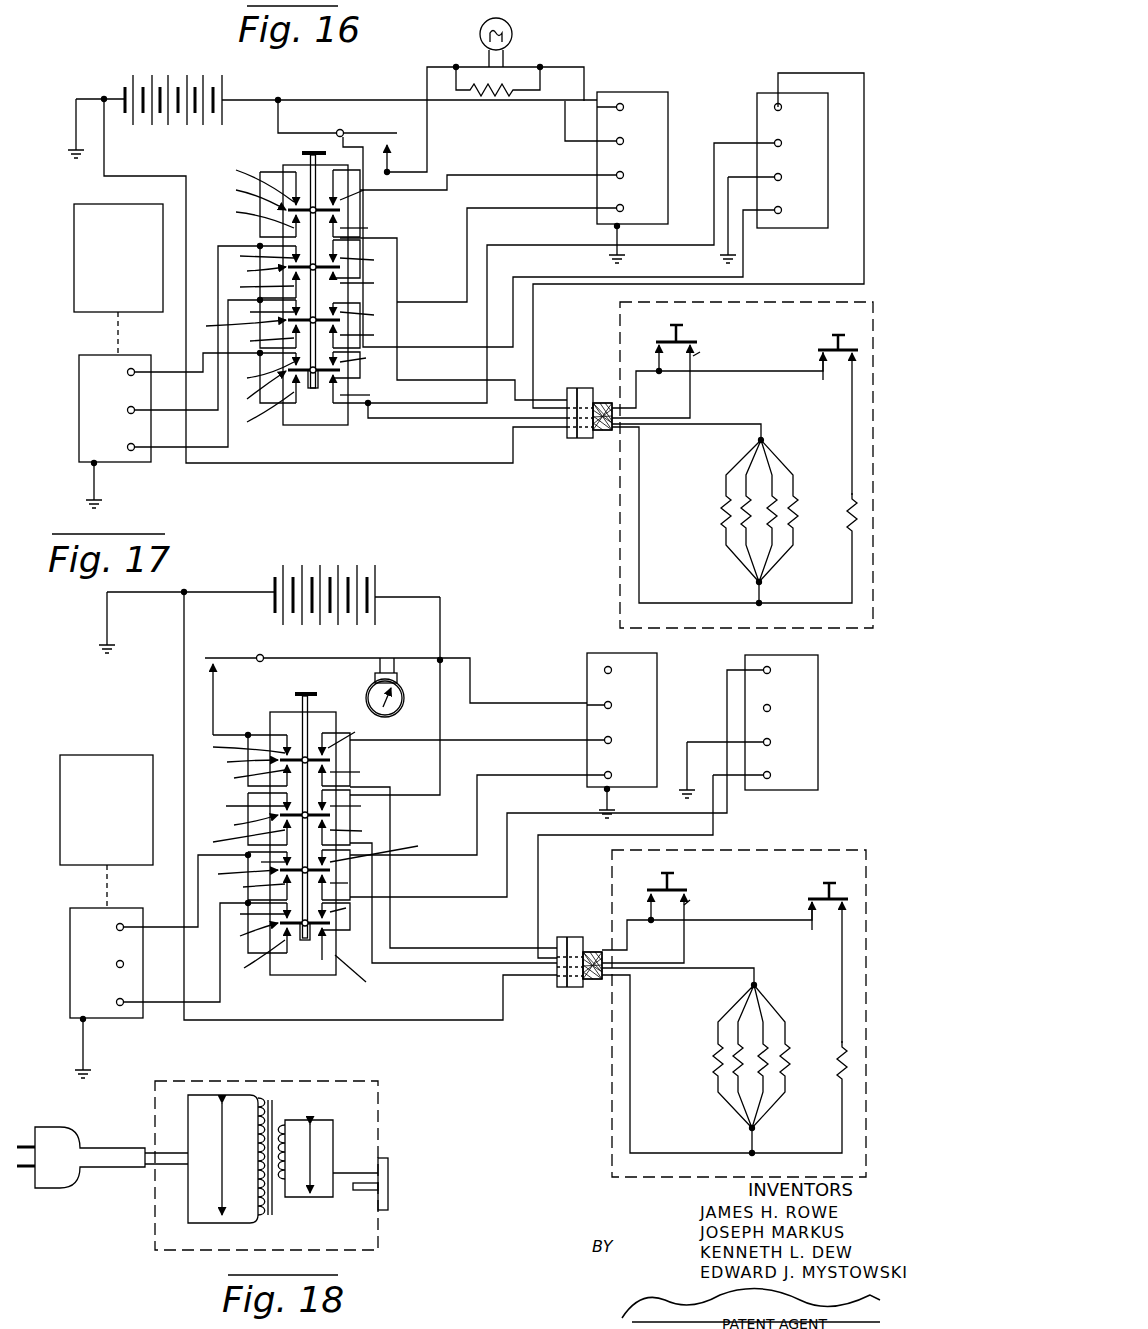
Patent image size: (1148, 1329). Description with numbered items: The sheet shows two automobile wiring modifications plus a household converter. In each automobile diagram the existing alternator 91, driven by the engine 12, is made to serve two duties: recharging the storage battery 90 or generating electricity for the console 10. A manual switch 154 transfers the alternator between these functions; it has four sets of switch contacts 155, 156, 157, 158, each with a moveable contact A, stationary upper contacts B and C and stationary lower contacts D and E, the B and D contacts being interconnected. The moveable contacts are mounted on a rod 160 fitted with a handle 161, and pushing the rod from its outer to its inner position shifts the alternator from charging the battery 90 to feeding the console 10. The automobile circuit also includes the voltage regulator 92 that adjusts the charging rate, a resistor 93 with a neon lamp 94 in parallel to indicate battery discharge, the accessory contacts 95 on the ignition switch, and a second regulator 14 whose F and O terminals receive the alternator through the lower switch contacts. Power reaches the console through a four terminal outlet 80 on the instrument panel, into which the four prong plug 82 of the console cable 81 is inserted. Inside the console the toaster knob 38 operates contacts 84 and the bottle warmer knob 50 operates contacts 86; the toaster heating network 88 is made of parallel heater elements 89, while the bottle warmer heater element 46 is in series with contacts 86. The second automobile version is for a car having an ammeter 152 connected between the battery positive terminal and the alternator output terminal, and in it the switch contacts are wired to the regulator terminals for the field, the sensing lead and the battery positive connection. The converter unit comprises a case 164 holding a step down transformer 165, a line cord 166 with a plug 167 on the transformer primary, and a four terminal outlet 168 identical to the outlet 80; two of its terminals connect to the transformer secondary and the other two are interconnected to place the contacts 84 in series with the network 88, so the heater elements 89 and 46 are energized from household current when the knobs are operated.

In FIG. 16, the console 10 is at (618, 535).
In FIG. 17, the console 10 is at (610, 1070).
In FIG. 16, the engine 12 is at (74, 241).
In FIG. 17, the engine 12 is at (60, 850).
In FIG. 16, the regulator 14 is at (825, 148).
In FIG. 17, the regulator 14 is at (810, 692).
In FIG. 16, the knob 38 is at (678, 333).
In FIG. 17, the knob 38 is at (668, 880).
In FIG. 16, the heater element 46 is at (845, 530).
In FIG. 17, the heater element 46 is at (836, 1075).
In FIG. 16, the knob 50 is at (836, 342).
In FIG. 17, the knob 50 is at (829, 885).
In FIG. 16, the four terminal outlet 80 is at (572, 388).
In FIG. 17, the four terminal outlet 80 is at (562, 937).
In FIG. 16, the cable 81 is at (600, 432).
In FIG. 17, the cable 81 is at (592, 982).
In FIG. 16, the four prong plug 82 is at (585, 388).
In FIG. 17, the four prong plug 82 is at (577, 937).
In FIG. 16, the contacts 84 is at (700, 352).
In FIG. 17, the contacts 84 is at (695, 898).
In FIG. 16, the contacts 86 is at (833, 370).
In FIG. 17, the contacts 86 is at (822, 918).
In FIG. 16, the heating network 88 is at (733, 521).
In FIG. 17, the heating network 88 is at (712, 1025).
In FIG. 16, the heater elements 89 is at (795, 520).
In FIG. 17, the heater elements 89 is at (787, 1068).
In FIG. 16, the storage battery 90 is at (170, 82).
In FIG. 17, the storage battery 90 is at (322, 578).
In FIG. 16, the alternator 91 is at (79, 418).
In FIG. 17, the alternator 91 is at (80, 990).
In FIG. 16, the voltage regulator 92 is at (663, 133).
In FIG. 17, the voltage regulator 92 is at (648, 693).
In FIG. 16, the resistor 93 is at (490, 96).
In FIG. 16, the neon lamp 94 is at (514, 37).
In FIG. 16, the accessory contacts 95 is at (388, 131).
In FIG. 17, the accessory contacts 95 is at (218, 655).
In FIG. 17, the ammeter 152 is at (400, 692).
In FIG. 16, the manual switch 154 is at (282, 160).
In FIG. 17, the manual switch 154 is at (266, 710).
In FIG. 16, the first set of switch contacts 155 is at (346, 210).
In FIG. 17, the first set of switch contacts 155 is at (337, 760).
In FIG. 16, the second set of switch contacts 156 is at (346, 267).
In FIG. 17, the second set of switch contacts 156 is at (337, 816).
In FIG. 16, the third set of switch contacts 157 is at (346, 320).
In FIG. 17, the third set of switch contacts 157 is at (337, 870).
In FIG. 16, the fourth set of switch contacts 158 is at (346, 372).
In FIG. 17, the fourth set of switch contacts 158 is at (337, 924).
In FIG. 16, the rod 160 is at (310, 392).
In FIG. 17, the rod 160 is at (298, 942).
In FIG. 16, the handle 161 is at (318, 151).
In FIG. 17, the handle 161 is at (318, 694).
In FIG. 18, the case 164 is at (378, 1098).
In FIG. 18, the step down transformer 165 is at (286, 1105).
In FIG. 18, the line cord 166 is at (117, 1165).
In FIG. 18, the plug 167 is at (62, 1133).
In FIG. 18, the four terminal outlet 168 is at (388, 1165).